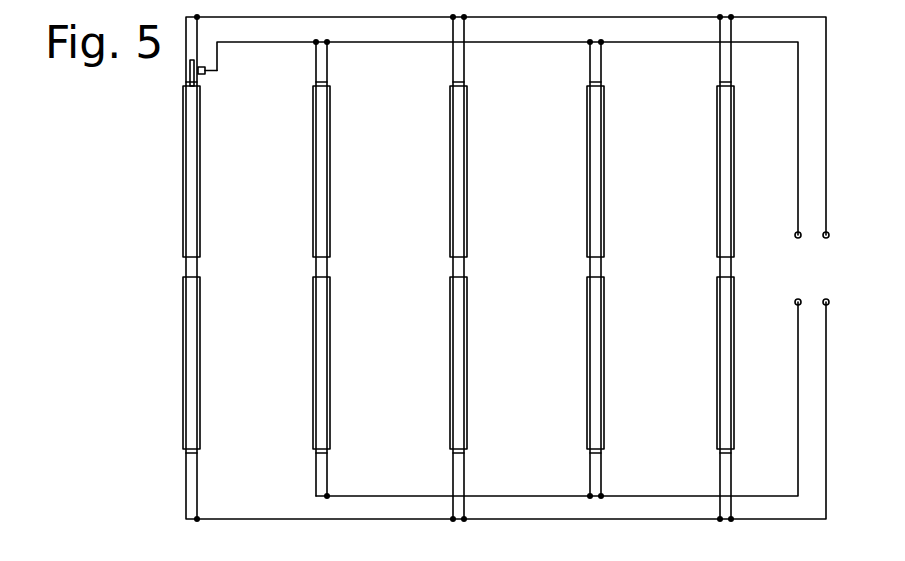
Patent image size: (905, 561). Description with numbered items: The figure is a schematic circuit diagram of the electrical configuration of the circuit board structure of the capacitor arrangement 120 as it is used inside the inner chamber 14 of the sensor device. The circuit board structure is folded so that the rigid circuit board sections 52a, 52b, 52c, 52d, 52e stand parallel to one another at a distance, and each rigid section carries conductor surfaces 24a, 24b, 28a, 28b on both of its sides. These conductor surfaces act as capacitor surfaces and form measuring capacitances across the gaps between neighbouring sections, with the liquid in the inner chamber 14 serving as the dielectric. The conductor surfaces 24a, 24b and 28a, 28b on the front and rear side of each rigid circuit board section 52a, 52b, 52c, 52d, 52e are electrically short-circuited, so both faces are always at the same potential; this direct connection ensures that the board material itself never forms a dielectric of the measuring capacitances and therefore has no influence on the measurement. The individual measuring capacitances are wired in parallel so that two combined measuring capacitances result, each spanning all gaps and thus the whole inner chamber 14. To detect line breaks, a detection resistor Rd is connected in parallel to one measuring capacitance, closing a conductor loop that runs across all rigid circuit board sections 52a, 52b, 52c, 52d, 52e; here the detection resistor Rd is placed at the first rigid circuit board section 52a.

The capacitor arrangement 120 is at (152, 445).
The detection resistor Rd is at (200, 76).
The inner chamber 14 is at (524, 348).
The conductor surface 24a is at (197, 157).
The conductor surface 24b is at (327, 172).
The conductor surface 28a is at (197, 403).
The conductor surface 28b is at (327, 420).
The rigid circuit board section 52a is at (188, 267).
The rigid circuit board section 52b is at (317, 268).
The rigid circuit board section 52c is at (454, 268).
The rigid circuit board section 52d is at (591, 268).
The rigid circuit board section 52e is at (721, 268).